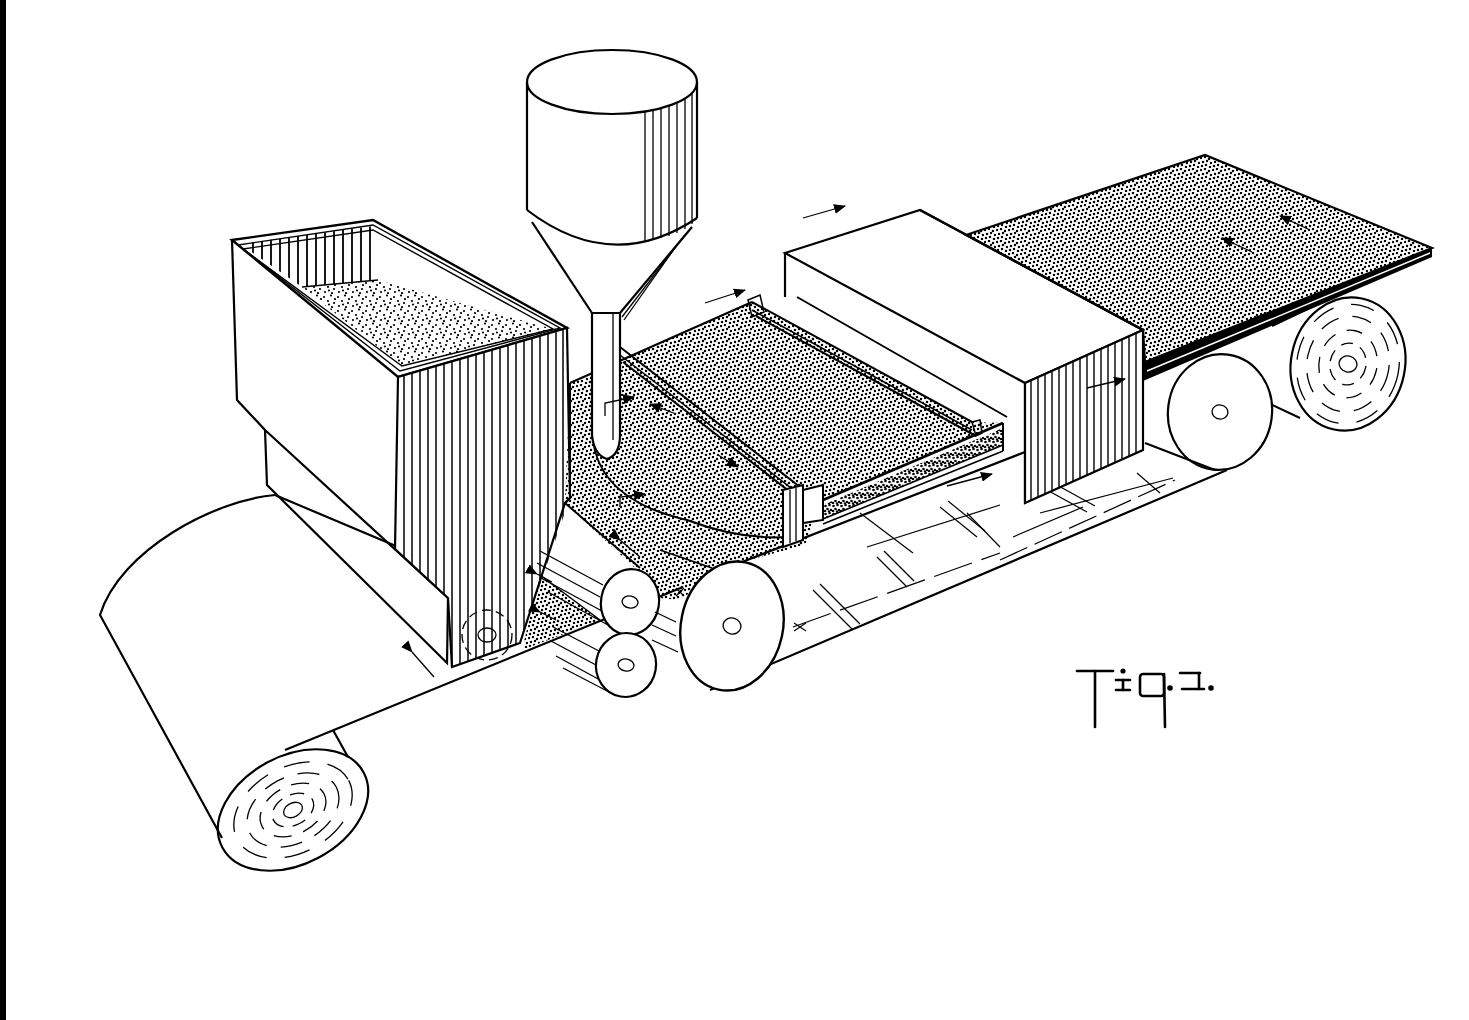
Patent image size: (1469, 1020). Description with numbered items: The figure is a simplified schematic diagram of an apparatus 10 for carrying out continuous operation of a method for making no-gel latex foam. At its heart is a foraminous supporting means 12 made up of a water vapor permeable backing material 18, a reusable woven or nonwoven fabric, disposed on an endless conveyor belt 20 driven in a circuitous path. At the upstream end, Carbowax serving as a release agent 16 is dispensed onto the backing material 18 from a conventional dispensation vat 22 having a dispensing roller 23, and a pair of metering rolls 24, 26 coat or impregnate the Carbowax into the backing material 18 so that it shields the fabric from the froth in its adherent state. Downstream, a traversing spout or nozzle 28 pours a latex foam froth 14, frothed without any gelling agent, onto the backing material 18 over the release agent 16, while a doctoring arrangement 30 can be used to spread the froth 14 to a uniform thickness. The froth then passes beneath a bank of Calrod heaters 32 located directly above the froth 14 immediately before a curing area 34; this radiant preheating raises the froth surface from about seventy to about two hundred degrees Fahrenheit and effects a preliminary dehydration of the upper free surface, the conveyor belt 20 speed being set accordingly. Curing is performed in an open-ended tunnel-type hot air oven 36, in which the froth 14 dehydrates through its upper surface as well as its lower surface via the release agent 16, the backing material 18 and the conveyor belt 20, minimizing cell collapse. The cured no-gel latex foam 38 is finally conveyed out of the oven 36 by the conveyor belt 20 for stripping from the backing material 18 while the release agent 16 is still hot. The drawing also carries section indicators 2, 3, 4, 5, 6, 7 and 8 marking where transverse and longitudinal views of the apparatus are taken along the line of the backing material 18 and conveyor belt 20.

The apparatus 10 is at (846, 158).
The foraminous supporting means 12 is at (797, 552).
The latex foam froth 14 is at (667, 347).
The release agent 16 is at (404, 305).
The water vapor permeable backing material 18 is at (240, 524).
The endless conveyor belt 20 is at (874, 500).
The dispensation vat 22 is at (242, 311).
The dispensing roller 23 is at (486, 662).
The metering roll 24 is at (582, 660).
The metering roll 26 is at (601, 679).
The traversing spout or nozzle 28 is at (556, 250).
The doctoring arrangement 30 is at (630, 345).
The bank of Calrod heaters 32 is at (770, 301).
The curing area 34 is at (884, 214).
The tunnel-type hot air oven 36 is at (946, 242).
The cured no-gel latex foam 38 is at (1133, 183).
The section line 2 is at (468, 632).
The section line 3 is at (588, 548).
The section line 4 is at (632, 445).
The section line 5 is at (694, 435).
The section line 6 is at (839, 401).
The section line 7 is at (952, 309).
The section line 8 is at (1257, 223).